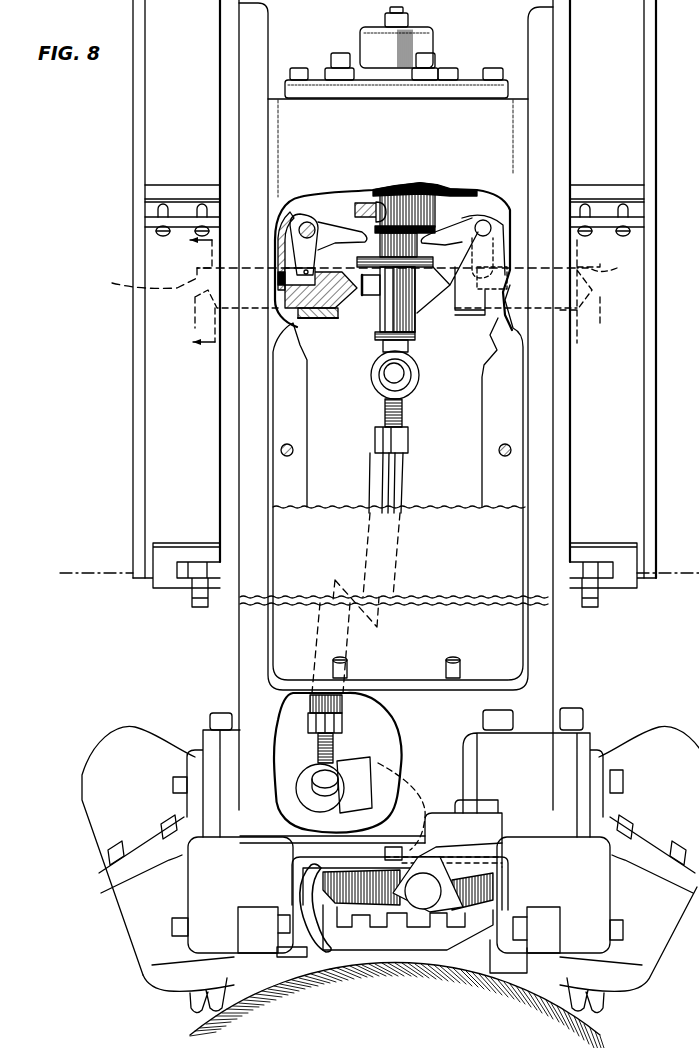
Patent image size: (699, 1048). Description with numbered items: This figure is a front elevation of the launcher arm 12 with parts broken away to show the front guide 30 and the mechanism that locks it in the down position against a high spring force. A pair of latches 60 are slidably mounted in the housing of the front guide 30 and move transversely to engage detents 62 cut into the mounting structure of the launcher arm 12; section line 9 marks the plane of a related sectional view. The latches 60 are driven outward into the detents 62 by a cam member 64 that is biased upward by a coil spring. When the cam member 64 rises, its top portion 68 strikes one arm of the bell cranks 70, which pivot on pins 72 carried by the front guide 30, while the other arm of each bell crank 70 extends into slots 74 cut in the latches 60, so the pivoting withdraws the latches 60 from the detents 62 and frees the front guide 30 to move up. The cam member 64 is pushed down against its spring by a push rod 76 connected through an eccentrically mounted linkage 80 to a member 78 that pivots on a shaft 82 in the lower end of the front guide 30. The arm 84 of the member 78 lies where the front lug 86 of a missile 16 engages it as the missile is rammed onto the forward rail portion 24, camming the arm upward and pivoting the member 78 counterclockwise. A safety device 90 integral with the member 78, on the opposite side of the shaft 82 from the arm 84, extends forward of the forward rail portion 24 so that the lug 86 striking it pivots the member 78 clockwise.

The section line 9- 9 is at (191, 297).
The launcher arm 12 is at (165, 343).
The missile 16 is at (200, 1023).
The forward rail portion 24 is at (248, 923).
The front guide 30 is at (313, 112).
The latches 60 is at (347, 323).
The detents 62 is at (365, 291).
The cam member 64 is at (369, 313).
The top portion 68 is at (396, 232).
The bell cranks 70 is at (326, 205).
The pins 72 is at (307, 221).
The slots 74 is at (283, 304).
The push rod 76 is at (401, 482).
The member 78 is at (305, 875).
The eccentrically mounted linkage 80 is at (380, 773).
The shaft 82 is at (422, 900).
The arm 84 is at (497, 888).
The front lug 86 is at (307, 960).
The safety device 90 is at (325, 960).